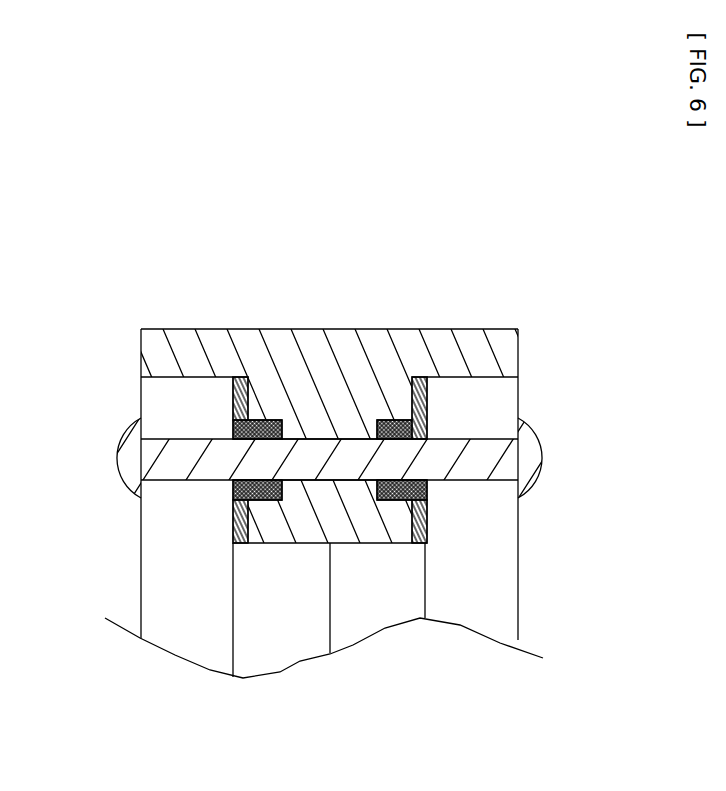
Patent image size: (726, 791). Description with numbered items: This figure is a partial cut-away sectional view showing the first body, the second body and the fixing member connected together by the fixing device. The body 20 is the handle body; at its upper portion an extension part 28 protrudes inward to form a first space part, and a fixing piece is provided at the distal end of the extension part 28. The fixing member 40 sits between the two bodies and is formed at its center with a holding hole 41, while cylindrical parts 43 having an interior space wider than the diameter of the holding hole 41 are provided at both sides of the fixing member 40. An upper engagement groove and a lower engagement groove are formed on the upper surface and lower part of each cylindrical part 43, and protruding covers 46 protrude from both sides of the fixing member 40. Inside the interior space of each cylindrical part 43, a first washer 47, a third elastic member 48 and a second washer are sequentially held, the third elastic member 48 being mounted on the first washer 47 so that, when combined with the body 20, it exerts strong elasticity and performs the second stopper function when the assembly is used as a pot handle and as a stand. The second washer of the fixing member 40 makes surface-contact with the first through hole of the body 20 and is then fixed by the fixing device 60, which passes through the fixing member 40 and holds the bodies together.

The body 20 is at (140, 582).
The extension part 28 is at (353, 610).
The fixing member 40 is at (187, 347).
The holding hole 41 is at (330, 440).
The cylindrical part 43 is at (335, 510).
The protruding cover 46 is at (395, 420).
The first washer 47 is at (377, 421).
The third elastic member 48 is at (395, 420).
The fixing device 60 is at (512, 462).